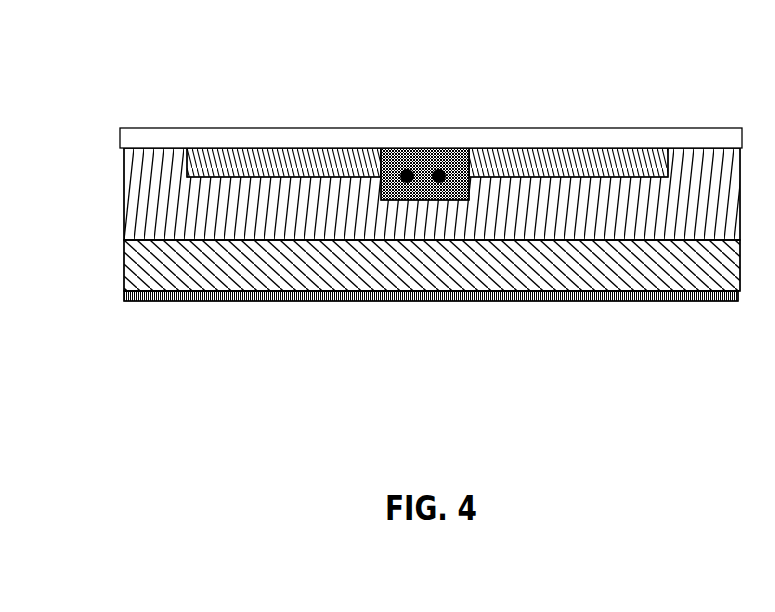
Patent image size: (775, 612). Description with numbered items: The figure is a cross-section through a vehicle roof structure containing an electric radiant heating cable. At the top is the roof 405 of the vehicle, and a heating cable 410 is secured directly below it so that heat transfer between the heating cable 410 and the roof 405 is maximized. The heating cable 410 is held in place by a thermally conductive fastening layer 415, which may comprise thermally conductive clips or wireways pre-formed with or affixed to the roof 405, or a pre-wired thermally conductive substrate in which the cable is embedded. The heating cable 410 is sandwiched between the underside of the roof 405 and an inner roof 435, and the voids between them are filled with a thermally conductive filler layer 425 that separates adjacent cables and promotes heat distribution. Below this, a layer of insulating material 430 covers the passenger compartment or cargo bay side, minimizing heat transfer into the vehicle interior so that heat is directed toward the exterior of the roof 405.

The roof 405 is at (132, 128).
The heating cable 410 is at (399, 148).
The thermally conductive fastening layer 415 is at (238, 162).
The thermally conductive filler layer 425 is at (123, 212).
The layer of insulating material 430 is at (123, 283).
The inner roof 435 is at (250, 297).